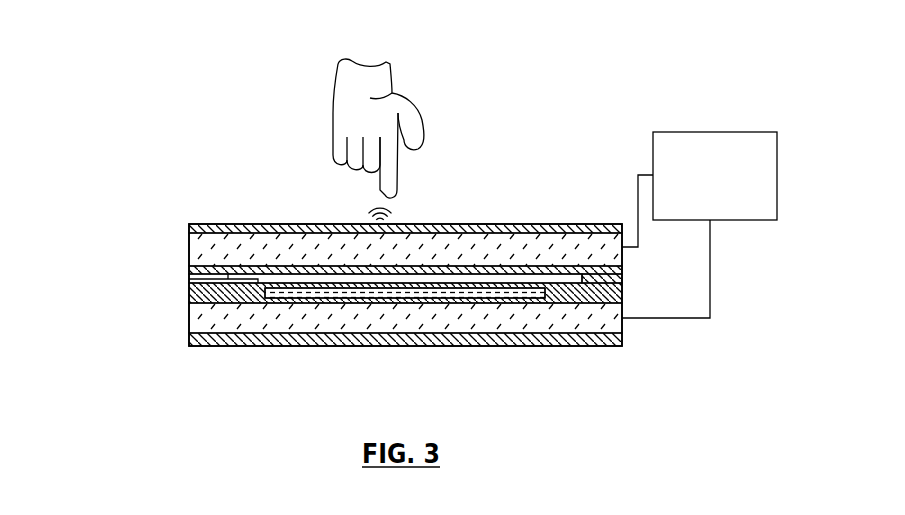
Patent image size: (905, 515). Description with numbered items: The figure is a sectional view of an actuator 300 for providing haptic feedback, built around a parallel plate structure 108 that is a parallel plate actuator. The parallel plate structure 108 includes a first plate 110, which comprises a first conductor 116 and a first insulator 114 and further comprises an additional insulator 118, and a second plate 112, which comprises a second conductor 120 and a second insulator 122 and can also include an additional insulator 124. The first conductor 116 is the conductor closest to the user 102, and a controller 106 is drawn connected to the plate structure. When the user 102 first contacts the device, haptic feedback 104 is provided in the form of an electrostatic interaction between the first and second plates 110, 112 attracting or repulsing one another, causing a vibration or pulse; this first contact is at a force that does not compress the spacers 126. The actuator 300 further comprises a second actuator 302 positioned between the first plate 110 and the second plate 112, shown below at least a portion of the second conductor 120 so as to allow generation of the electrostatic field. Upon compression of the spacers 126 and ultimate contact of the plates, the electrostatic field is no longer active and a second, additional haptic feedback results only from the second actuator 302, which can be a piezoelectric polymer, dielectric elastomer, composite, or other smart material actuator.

The actuator 300 is at (222, 72).
The user 102 is at (390, 99).
The haptic feedback 104 is at (368, 207).
The controller 106 is at (730, 184).
The parallel plate structure 108 is at (83, 217).
The first plate 110 is at (163, 217).
The second plate 112 is at (163, 292).
The first insulator 114 is at (247, 276).
The first conductor 116 is at (530, 260).
The additional insulator 118 is at (520, 228).
The second conductor 120 is at (530, 333).
The second insulator 122 is at (590, 300).
The additional insulator 124 is at (527, 347).
The spacers 126 is at (617, 283).
The second actuator 302 is at (378, 296).